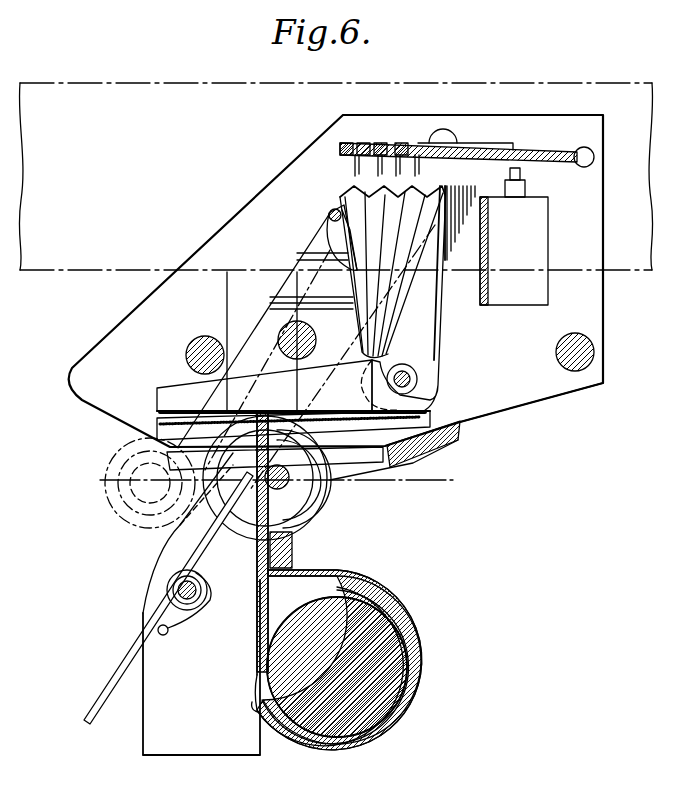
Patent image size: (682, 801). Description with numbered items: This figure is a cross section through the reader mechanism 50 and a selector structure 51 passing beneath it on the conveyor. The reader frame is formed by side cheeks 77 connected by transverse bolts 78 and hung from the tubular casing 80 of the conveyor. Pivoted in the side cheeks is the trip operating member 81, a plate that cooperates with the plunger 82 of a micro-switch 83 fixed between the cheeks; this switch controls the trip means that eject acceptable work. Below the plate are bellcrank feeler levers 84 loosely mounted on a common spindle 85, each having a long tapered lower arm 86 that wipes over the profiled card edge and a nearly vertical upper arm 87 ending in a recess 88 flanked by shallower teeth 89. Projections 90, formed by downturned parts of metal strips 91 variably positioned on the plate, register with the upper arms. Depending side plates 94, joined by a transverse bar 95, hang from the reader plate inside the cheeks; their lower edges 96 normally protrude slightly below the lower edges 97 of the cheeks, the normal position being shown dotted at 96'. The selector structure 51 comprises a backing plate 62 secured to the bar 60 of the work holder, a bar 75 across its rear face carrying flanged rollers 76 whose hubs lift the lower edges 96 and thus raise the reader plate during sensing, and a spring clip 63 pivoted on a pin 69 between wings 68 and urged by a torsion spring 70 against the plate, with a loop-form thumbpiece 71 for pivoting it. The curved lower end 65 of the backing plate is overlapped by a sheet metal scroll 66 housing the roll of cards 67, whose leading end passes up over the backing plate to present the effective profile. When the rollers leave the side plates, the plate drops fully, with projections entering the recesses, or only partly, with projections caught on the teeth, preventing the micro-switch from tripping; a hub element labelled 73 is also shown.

The tubular casing 80 is at (123, 92).
The side cheeks 77 is at (395, 124).
The projections 90 is at (348, 170).
The metal strips 91 is at (448, 142).
The trip operating member 81 is at (522, 154).
The plunger 82 is at (528, 178).
The teeth 89 is at (432, 190).
The depending side plates 94 is at (340, 208).
The recess 88 is at (432, 222).
The micro-switch 83 is at (514, 251).
The transverse bolts 78 is at (203, 336).
The transverse bar 95 is at (278, 340).
The upper arm 87 is at (425, 332).
The lower arms 86 is at (170, 392).
The feeler levers 84 is at (425, 362).
The common spindle 85 is at (412, 383).
The reader mechanism 50 is at (604, 358).
The lower edges 97 is at (546, 395).
The lower edges 96 is at (423, 444).
The dotted-line position 96' is at (394, 478).
The bar 75 is at (320, 468).
The roller 73 is at (150, 483).
The spring clip 63 is at (210, 506).
The flanged rollers 76 is at (147, 492).
The bar 60 is at (295, 548).
The pin 69 is at (207, 586).
The backing plate 62 is at (270, 608).
The selector structure 51 is at (140, 605).
The torsion spring 70 is at (200, 608).
The sheet metal scroll 66 is at (403, 600).
The roll of cards 67 is at (405, 666).
The loop-form thumbpiece 71 is at (108, 682).
The wings 68 is at (201, 714).
The curved lower end 65 is at (293, 732).